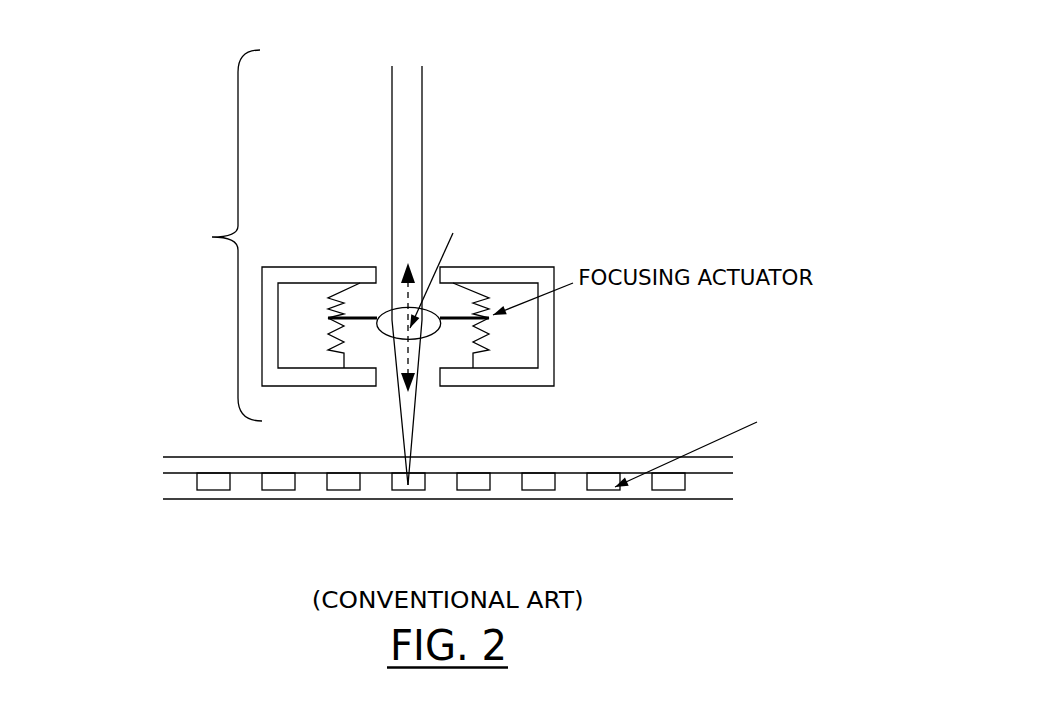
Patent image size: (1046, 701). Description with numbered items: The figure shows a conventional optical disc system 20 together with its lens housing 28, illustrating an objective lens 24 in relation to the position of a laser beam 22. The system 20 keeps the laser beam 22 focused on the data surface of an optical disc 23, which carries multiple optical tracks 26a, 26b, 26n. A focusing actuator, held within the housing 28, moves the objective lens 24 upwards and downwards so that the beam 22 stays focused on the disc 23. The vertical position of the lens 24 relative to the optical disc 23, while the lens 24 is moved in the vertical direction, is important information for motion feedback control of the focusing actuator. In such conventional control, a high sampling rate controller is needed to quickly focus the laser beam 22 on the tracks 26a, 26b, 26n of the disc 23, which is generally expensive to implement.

The conventional optical disc system 20 is at (647, 50).
The laser beam 22 is at (392, 229).
The optical disc 23 is at (475, 467).
The objective lens 24 is at (387, 305).
The optical track 26a is at (210, 490).
The optical track 26b is at (275, 490).
The optical track 26n is at (663, 490).
The housing 28 is at (262, 360).